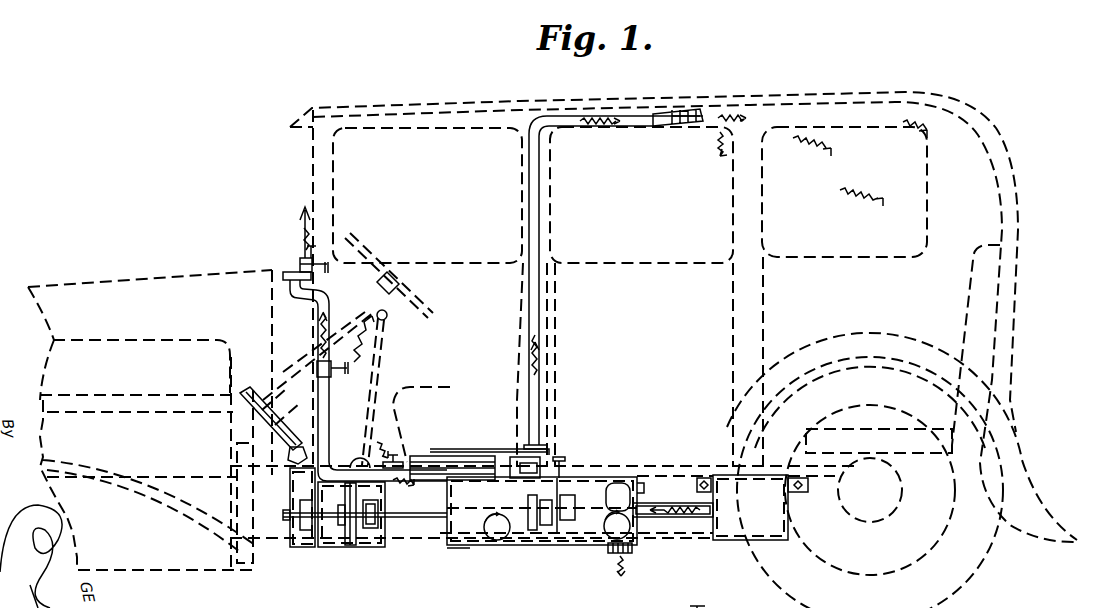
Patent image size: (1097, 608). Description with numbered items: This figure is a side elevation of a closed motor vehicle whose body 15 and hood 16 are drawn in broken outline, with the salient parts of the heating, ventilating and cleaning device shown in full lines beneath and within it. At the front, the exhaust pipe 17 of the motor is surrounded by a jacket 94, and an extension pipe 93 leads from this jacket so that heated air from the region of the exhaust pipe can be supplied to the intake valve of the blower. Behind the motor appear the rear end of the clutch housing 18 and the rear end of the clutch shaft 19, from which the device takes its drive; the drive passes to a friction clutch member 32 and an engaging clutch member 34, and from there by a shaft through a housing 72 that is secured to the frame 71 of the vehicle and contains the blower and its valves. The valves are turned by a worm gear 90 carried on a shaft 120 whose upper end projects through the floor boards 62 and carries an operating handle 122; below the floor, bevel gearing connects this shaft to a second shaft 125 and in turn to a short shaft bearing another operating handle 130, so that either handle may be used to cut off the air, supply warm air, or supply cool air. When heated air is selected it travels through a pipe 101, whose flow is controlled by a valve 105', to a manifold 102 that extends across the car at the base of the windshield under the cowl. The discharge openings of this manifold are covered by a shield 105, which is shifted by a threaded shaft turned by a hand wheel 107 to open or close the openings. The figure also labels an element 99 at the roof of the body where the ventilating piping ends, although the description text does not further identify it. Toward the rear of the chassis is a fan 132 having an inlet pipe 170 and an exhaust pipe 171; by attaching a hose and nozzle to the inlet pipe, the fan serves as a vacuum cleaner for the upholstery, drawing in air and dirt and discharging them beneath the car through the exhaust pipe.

The body 15 is at (1000, 172).
The hood 16 is at (198, 272).
The exhaust pipe 17 is at (160, 395).
The rear end of the clutch housing 18 is at (282, 548).
The rear end of the clutch shaft 19 is at (290, 513).
The friction clutch member 32 is at (350, 545).
The clutch member 34 is at (370, 548).
The floor boards 62 is at (625, 467).
The frame 71 is at (650, 467).
The housing 72 is at (470, 548).
The worm gear 90 is at (531, 228).
The extension pipe 93 is at (520, 548).
The jacket 94 is at (252, 388).
The air nozzle 99 is at (690, 112).
The pipe 101 is at (290, 295).
The manifold 102 is at (290, 271).
The shield 105 is at (295, 238).
The valve 105' is at (380, 365).
The hand wheel 107 is at (322, 262).
The shaft 120 is at (305, 548).
The operating handle 122 is at (565, 456).
The shaft 125 is at (466, 578).
The operating handle 130 is at (398, 607).
The fan 132 is at (615, 522).
The inlet pipe 170 is at (658, 502).
The exhaust pipe 171 is at (625, 555).